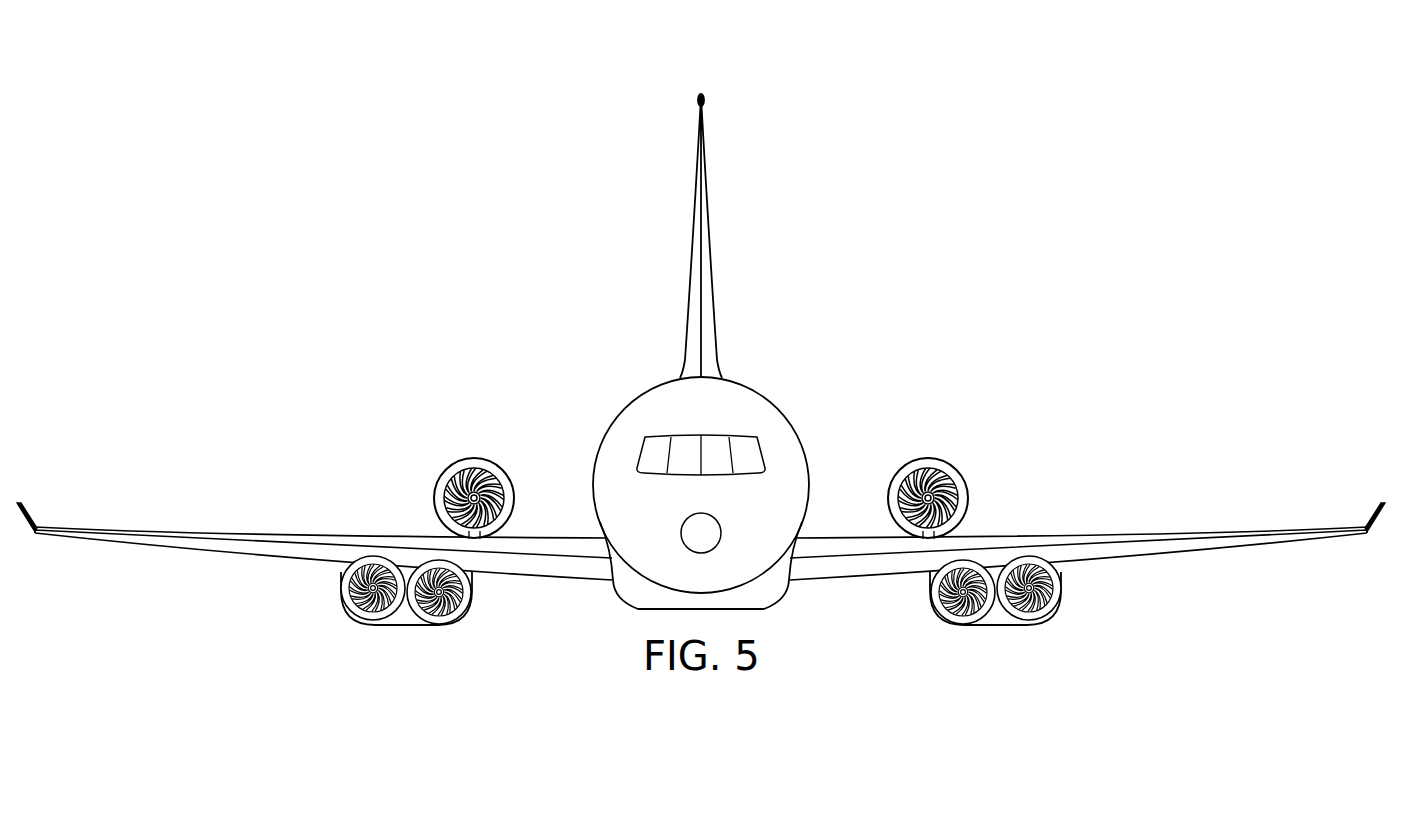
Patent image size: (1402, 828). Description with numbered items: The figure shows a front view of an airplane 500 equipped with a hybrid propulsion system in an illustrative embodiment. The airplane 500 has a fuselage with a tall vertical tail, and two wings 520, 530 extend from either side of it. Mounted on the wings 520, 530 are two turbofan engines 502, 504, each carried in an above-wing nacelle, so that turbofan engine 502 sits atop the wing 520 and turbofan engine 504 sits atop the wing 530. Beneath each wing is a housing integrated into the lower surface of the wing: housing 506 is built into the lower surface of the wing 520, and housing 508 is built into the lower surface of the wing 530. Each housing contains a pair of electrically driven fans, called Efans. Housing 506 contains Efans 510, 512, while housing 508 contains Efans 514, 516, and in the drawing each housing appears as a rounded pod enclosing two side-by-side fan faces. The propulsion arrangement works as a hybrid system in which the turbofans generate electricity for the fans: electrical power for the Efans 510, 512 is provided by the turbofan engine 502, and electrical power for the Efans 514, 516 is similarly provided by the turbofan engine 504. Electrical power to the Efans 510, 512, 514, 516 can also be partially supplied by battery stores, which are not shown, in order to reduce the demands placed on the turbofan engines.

The airplane 500 is at (701, 375).
The turbofan engine 502 is at (467, 462).
The turbofan engine 504 is at (935, 462).
The housing 506 is at (391, 625).
The housing 508 is at (1014, 625).
The Efan 510 is at (342, 598).
The Efan 512 is at (455, 620).
The Efan 514 is at (1057, 600).
The Efan 516 is at (950, 618).
The wing 520 is at (247, 532).
The wing 530 is at (1154, 532).